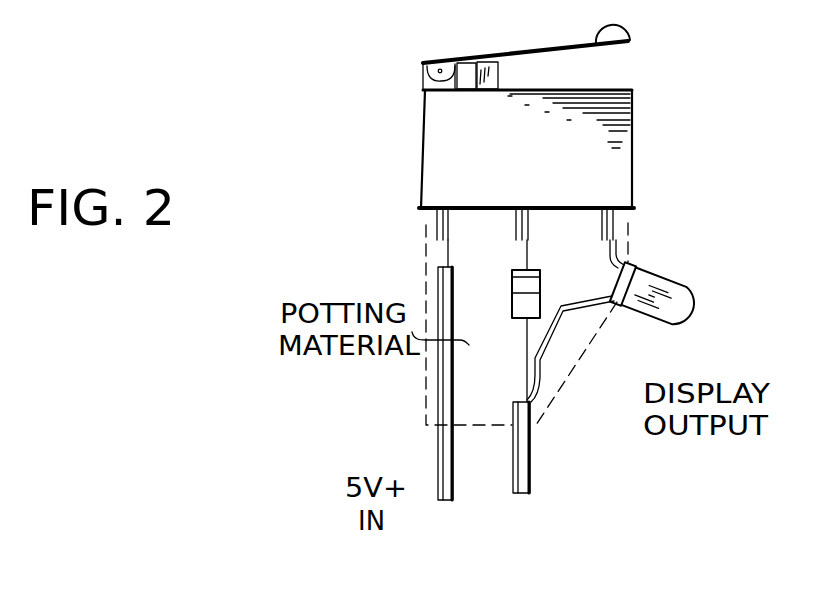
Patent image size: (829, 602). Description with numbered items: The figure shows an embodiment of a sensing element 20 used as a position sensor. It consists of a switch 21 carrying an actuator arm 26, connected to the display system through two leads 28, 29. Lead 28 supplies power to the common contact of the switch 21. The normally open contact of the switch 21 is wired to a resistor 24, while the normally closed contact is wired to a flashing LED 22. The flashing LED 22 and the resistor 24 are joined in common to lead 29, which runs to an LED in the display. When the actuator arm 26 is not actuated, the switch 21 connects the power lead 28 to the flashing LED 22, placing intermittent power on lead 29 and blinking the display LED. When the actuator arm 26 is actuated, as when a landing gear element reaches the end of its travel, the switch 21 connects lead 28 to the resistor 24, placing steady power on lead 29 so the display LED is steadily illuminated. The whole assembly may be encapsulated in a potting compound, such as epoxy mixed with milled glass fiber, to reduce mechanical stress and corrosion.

The sensing element 20 is at (652, 58).
The switch 21 is at (633, 143).
The flashing LED 22 is at (664, 276).
The resistor 24 is at (545, 290).
The actuator arm 26 is at (532, 46).
The lead 28 is at (434, 497).
The lead 29 is at (514, 490).